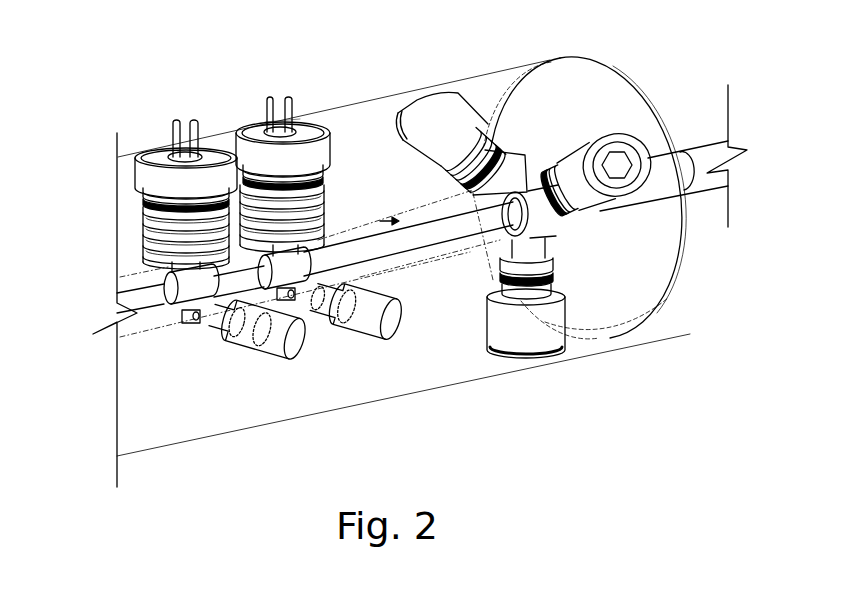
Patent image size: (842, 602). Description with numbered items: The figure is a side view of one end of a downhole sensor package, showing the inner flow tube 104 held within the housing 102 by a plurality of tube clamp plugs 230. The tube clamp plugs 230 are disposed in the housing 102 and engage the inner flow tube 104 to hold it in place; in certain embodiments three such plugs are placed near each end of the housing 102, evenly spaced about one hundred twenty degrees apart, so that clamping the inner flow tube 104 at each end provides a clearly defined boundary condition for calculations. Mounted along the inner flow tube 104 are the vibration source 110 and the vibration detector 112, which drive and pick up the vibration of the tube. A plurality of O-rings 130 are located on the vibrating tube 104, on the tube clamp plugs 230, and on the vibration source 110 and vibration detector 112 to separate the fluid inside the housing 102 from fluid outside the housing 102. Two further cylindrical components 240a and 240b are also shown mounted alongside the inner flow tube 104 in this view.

The housing 102 is at (289, 128).
The inner flow tube 104 is at (142, 305).
The vibration source 110 is at (158, 173).
The vibration detector 112 is at (255, 155).
The O-ring 130 is at (148, 203).
The tube clamp plug 230 is at (433, 117).
The first sensor 240a is at (298, 347).
The second sensor 240b is at (392, 323).